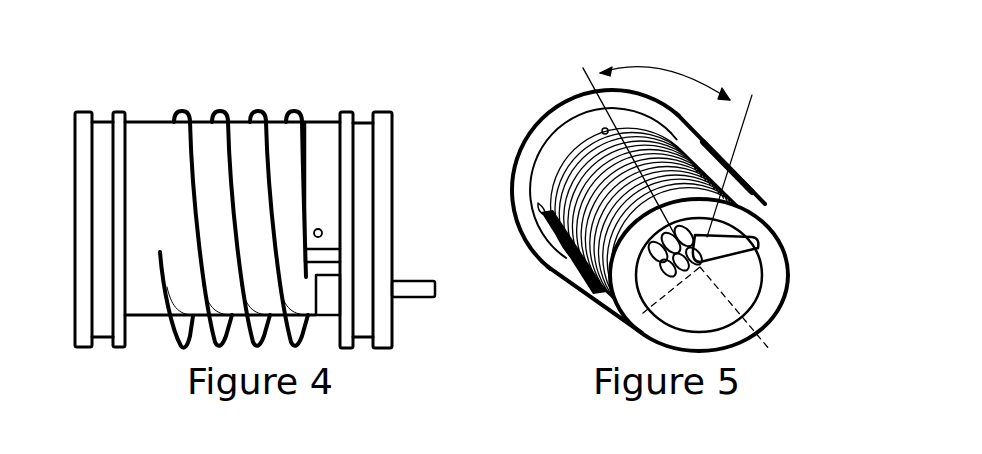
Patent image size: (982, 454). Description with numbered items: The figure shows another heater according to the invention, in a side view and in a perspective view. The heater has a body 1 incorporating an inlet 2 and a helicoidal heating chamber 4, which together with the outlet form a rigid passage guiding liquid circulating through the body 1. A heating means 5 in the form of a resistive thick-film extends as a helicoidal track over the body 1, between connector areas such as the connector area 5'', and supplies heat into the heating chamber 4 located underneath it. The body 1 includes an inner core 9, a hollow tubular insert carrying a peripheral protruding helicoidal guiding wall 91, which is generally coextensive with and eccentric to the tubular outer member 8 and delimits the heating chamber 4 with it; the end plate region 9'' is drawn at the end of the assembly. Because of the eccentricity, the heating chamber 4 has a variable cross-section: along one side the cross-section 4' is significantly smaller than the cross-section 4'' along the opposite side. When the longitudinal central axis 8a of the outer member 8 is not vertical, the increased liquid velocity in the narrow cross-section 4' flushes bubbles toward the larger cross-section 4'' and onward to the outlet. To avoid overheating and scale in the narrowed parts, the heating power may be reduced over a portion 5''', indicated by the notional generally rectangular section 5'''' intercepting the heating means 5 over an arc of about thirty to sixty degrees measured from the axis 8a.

In FIG. 5, the body 1 is at (513, 112).
In FIG. 4, the inlet 2 is at (412, 292).
In FIG. 5, the inlet 2 is at (730, 263).
In FIG. 4, the helicoidal heating chamber 4 is at (237, 228).
In FIG. 4, the cross-section of heating chamber (narrow side) 4' is at (400, 230).
In FIG. 4, the cross-section of heating chamber (wide side) 4'' is at (378, 224).
In FIG. 5, the heating means 5 is at (644, 228).
In FIG. 5, the connector area 5'' is at (508, 200).
In FIG. 5, the portion of heating means with reduced heating power 5''' is at (677, 138).
In FIG. 5, the notional rectangular section 5'''' is at (565, 104).
In FIG. 5, the tubular outer member 8 is at (557, 162).
In FIG. 5, the longitudinal central axis 8a is at (771, 352).
In FIG. 4, the inner core 9 is at (232, 193).
In FIG. 5, the inner core 9 is at (683, 293).
In FIG. 4, the end plate 9'' is at (85, 256).
In FIG. 4, the helicoidal guiding wall 91 is at (180, 331).